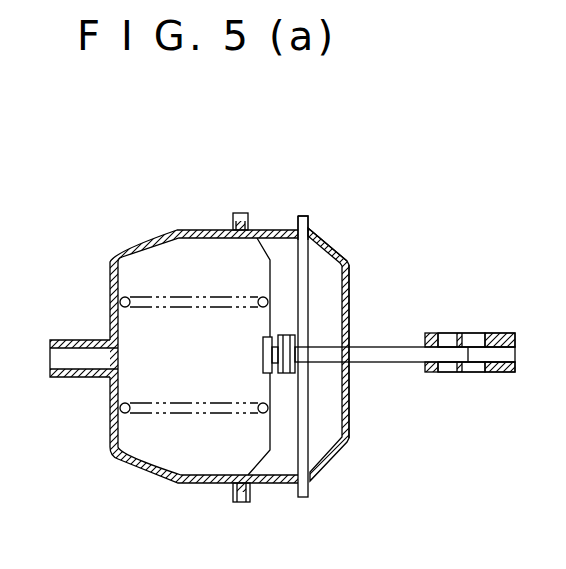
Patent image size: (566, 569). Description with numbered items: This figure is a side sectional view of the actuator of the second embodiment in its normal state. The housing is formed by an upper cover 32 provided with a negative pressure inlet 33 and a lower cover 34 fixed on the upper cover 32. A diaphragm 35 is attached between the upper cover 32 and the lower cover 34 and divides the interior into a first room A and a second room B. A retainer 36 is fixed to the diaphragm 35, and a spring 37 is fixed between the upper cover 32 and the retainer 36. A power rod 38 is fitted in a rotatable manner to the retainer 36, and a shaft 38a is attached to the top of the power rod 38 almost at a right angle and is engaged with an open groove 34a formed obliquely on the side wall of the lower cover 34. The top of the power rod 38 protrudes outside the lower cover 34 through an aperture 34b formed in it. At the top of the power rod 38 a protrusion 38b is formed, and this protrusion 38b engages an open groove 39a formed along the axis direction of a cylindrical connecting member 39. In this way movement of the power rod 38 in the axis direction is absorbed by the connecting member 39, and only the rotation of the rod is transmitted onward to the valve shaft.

The upper cover 32 is at (137, 474).
The negative pressure inlet 33 is at (57, 360).
The lower cover 34 is at (347, 258).
The open groove 34a is at (316, 232).
The aperture 34b is at (350, 343).
The diaphragm 35 is at (262, 245).
The retainer 36 is at (272, 320).
The spring 37 is at (145, 298).
The power rod 38 is at (325, 356).
The shaft 38a is at (293, 257).
The protrusion 38b is at (455, 331).
The cylindrical connecting member 39 is at (497, 374).
The open groove 39a is at (477, 340).
The first room A is at (188, 255).
The second room B is at (288, 457).